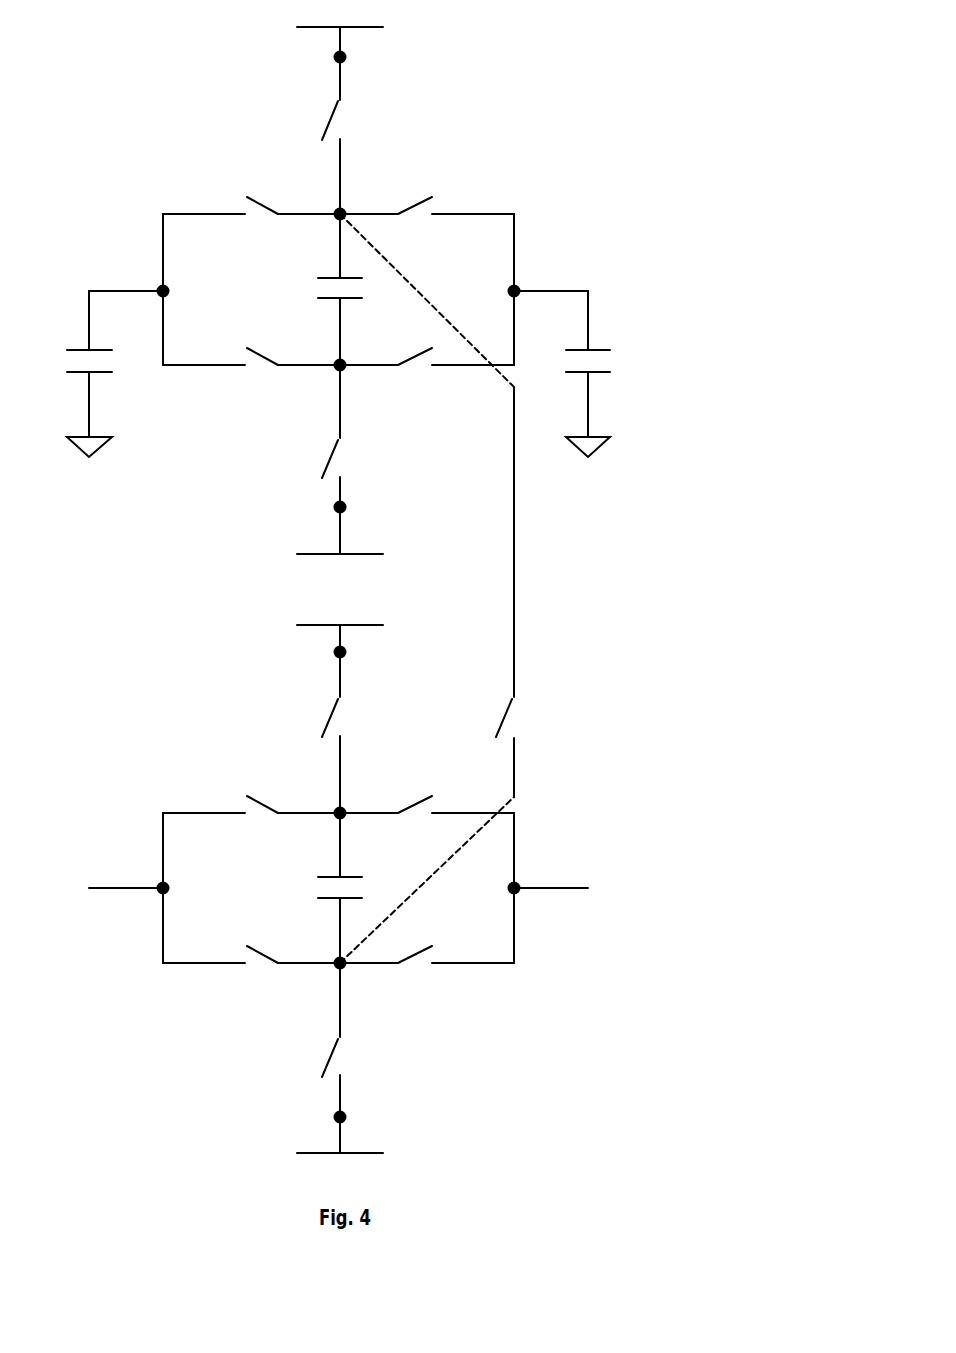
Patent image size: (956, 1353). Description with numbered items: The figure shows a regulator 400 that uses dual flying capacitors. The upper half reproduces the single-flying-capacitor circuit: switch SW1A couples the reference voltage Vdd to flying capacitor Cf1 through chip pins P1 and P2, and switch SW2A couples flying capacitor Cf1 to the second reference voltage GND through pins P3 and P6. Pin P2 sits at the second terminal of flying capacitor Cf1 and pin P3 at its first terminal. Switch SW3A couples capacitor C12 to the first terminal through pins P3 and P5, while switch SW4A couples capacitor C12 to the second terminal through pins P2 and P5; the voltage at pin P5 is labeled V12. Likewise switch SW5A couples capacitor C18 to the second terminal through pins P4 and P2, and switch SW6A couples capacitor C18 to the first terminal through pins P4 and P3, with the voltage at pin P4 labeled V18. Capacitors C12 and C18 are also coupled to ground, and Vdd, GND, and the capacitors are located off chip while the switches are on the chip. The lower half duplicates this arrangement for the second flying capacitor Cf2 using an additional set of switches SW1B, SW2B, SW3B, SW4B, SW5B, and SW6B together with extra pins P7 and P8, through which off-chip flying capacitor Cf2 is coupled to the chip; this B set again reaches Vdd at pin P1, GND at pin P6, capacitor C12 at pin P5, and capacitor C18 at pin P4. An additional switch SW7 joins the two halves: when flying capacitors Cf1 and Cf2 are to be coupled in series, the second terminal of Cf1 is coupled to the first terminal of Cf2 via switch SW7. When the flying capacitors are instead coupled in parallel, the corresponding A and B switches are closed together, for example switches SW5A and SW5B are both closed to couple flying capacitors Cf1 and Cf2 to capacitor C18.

The regulator 400 is at (642, 58).
The voltage reference Vdd is at (340, 313).
The voltage reference ground GND is at (340, 868).
The pin P1 is at (357, 362).
The pin P2 is at (338, 197).
The pin P3 is at (338, 351).
The pin P4 is at (179, 588).
The pin P5 is at (499, 588).
The pin P6 is at (357, 810).
The pin P7 is at (338, 795).
The pin P8 is at (338, 978).
The switch SW1A is at (369, 157).
The switch SW2A is at (372, 459).
The switch SW3A is at (451, 371).
The switch SW4A is at (451, 222).
The switch SW5A is at (229, 222).
The switch SW6A is at (229, 371).
The switch SW1B is at (369, 755).
The switch SW2B is at (370, 1058).
The switch SW3B is at (451, 970).
The switch SW4B is at (451, 820).
The switch SW5B is at (229, 820).
The switch SW6B is at (229, 970).
The switch SW7 is at (536, 592).
The flying capacitor Cf1 is at (363, 289).
The flying capacitor Cf2 is at (363, 888).
The capacitor C18 is at (112, 374).
The capacitor C12 is at (566, 374).
The output voltage V18 is at (111, 576).
The output voltage V12 is at (567, 576).